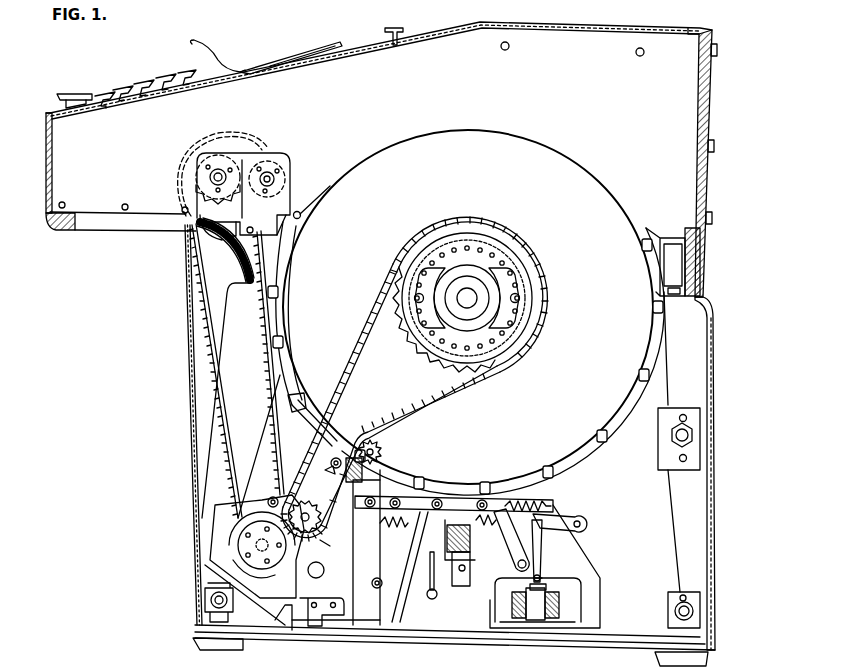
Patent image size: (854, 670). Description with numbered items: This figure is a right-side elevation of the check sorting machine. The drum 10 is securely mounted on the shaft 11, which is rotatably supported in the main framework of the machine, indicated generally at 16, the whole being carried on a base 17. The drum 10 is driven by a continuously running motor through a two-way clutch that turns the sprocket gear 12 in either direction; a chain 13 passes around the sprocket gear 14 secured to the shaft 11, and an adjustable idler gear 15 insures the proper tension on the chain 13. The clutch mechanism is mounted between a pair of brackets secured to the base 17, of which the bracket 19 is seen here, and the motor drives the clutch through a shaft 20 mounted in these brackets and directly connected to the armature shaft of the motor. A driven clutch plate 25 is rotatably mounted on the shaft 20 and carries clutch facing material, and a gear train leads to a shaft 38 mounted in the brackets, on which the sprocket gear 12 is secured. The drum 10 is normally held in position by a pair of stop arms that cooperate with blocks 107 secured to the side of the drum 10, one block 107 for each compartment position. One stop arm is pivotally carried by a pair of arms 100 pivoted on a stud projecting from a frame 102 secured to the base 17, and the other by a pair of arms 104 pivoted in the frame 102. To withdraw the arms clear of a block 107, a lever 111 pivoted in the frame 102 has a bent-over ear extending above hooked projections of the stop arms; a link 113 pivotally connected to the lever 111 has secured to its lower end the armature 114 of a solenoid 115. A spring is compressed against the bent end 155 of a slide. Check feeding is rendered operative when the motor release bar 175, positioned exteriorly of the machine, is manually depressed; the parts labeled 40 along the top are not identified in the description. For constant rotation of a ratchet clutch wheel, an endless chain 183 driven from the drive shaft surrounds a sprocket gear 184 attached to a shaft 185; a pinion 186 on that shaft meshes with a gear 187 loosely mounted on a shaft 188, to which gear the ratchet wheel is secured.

The drum 10 is at (488, 312).
The shaft 11 is at (470, 297).
The sprocket gear 12 is at (305, 524).
The chain 13 is at (440, 402).
The sprocket gear 14 is at (422, 358).
The adjustable idler gear 15 is at (385, 452).
The framework 16 is at (220, 502).
The base 17 is at (380, 640).
The bracket 19 is at (290, 590).
The shaft 20 is at (260, 550).
The driven clutch plate 25 is at (240, 545).
The shaft 38 is at (320, 528).
The keys 40 is at (158, 80).
The arms 100 is at (405, 542).
The frame 102 is at (585, 570).
The arms 104 is at (513, 548).
The blocks 107 is at (598, 440).
The lever 111 is at (566, 521).
The link 113 is at (542, 542).
The armature 114 is at (542, 582).
The solenoid 115 is at (560, 603).
The bent end 155 is at (553, 504).
The motor release bar 175 is at (73, 93).
The endless chain 183 is at (205, 325).
The sprocket gear 184 is at (180, 238).
The shaft 185 is at (208, 172).
The pinion 186 is at (184, 190).
The gear 187 is at (306, 190).
The shaft 188 is at (269, 176).